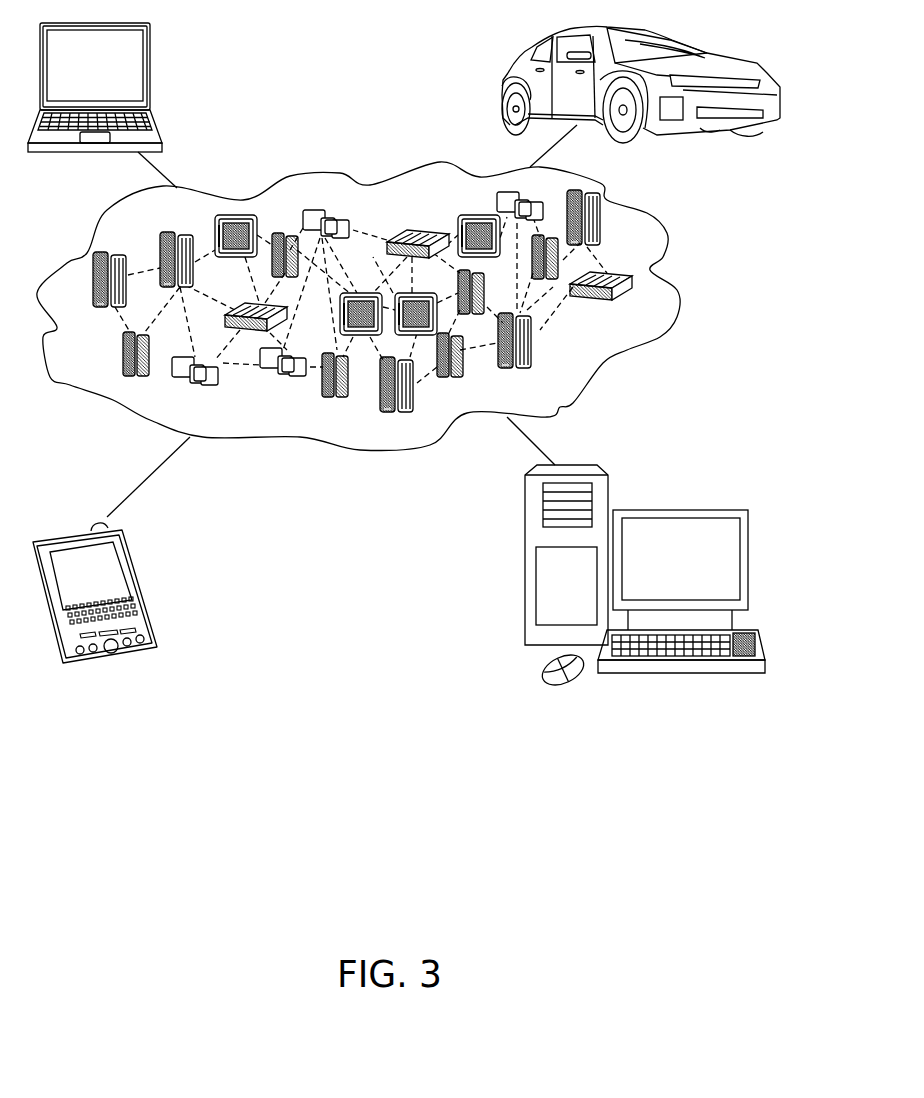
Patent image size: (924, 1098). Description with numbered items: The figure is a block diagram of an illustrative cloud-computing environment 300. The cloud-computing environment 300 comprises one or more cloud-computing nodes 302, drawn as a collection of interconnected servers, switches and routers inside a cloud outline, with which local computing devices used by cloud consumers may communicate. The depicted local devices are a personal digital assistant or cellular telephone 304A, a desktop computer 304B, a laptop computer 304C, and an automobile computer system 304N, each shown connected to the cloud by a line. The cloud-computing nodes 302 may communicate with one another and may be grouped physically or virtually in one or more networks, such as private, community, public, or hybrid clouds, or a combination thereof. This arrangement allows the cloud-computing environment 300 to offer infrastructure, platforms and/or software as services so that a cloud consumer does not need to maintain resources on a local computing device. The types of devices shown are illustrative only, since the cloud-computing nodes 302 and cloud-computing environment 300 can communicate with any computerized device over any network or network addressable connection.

The cloud-computing environment 300 is at (643, 282).
The cloud-computing nodes 302 is at (636, 311).
The personal digital assistant (PDA) or cellular telephone 304A is at (133, 560).
The desktop computer 304B is at (670, 510).
The laptop computer 304C is at (152, 52).
The automobile computer system 304N is at (505, 82).